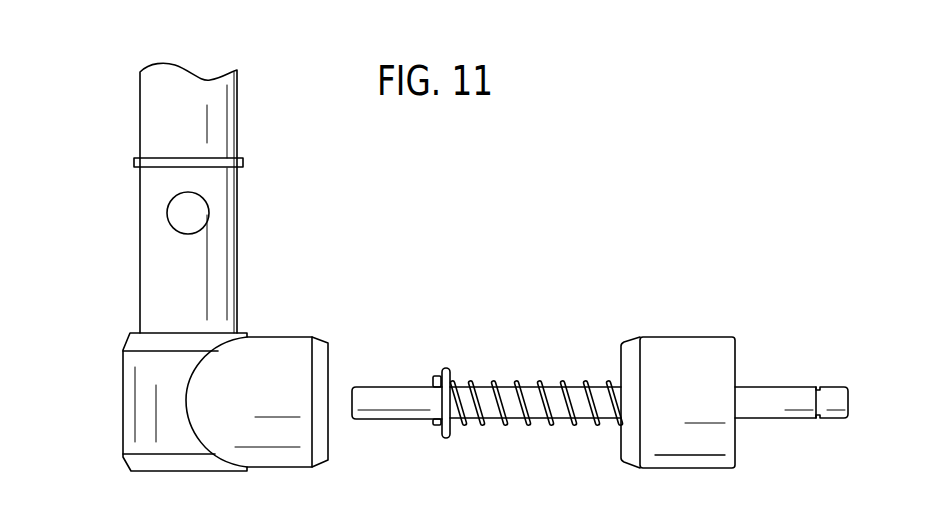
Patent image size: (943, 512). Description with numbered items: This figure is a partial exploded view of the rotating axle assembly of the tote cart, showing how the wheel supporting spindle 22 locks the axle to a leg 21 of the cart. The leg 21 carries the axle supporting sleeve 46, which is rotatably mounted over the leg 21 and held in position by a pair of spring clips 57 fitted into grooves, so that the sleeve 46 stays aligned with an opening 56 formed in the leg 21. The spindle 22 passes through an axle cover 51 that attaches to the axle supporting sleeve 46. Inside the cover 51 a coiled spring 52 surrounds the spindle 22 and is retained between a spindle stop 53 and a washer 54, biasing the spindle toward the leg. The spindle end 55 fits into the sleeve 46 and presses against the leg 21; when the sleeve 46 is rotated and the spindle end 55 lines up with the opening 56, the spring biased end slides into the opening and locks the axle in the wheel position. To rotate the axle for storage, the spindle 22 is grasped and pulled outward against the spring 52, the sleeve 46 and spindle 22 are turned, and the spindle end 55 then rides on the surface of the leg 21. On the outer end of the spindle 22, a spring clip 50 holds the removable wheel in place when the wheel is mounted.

The leg 21 is at (157, 113).
The spring clips 57 is at (243, 160).
The opening 56 is at (168, 213).
The axle supporting sleeve 46 is at (280, 345).
The spindle end 55 is at (360, 393).
The spindle stop 53 is at (437, 421).
The washer 54 is at (447, 377).
The coiled spring 52 is at (517, 380).
The axle cover 51 is at (682, 345).
The spindle 22 is at (772, 411).
The spring clip 50 is at (818, 387).